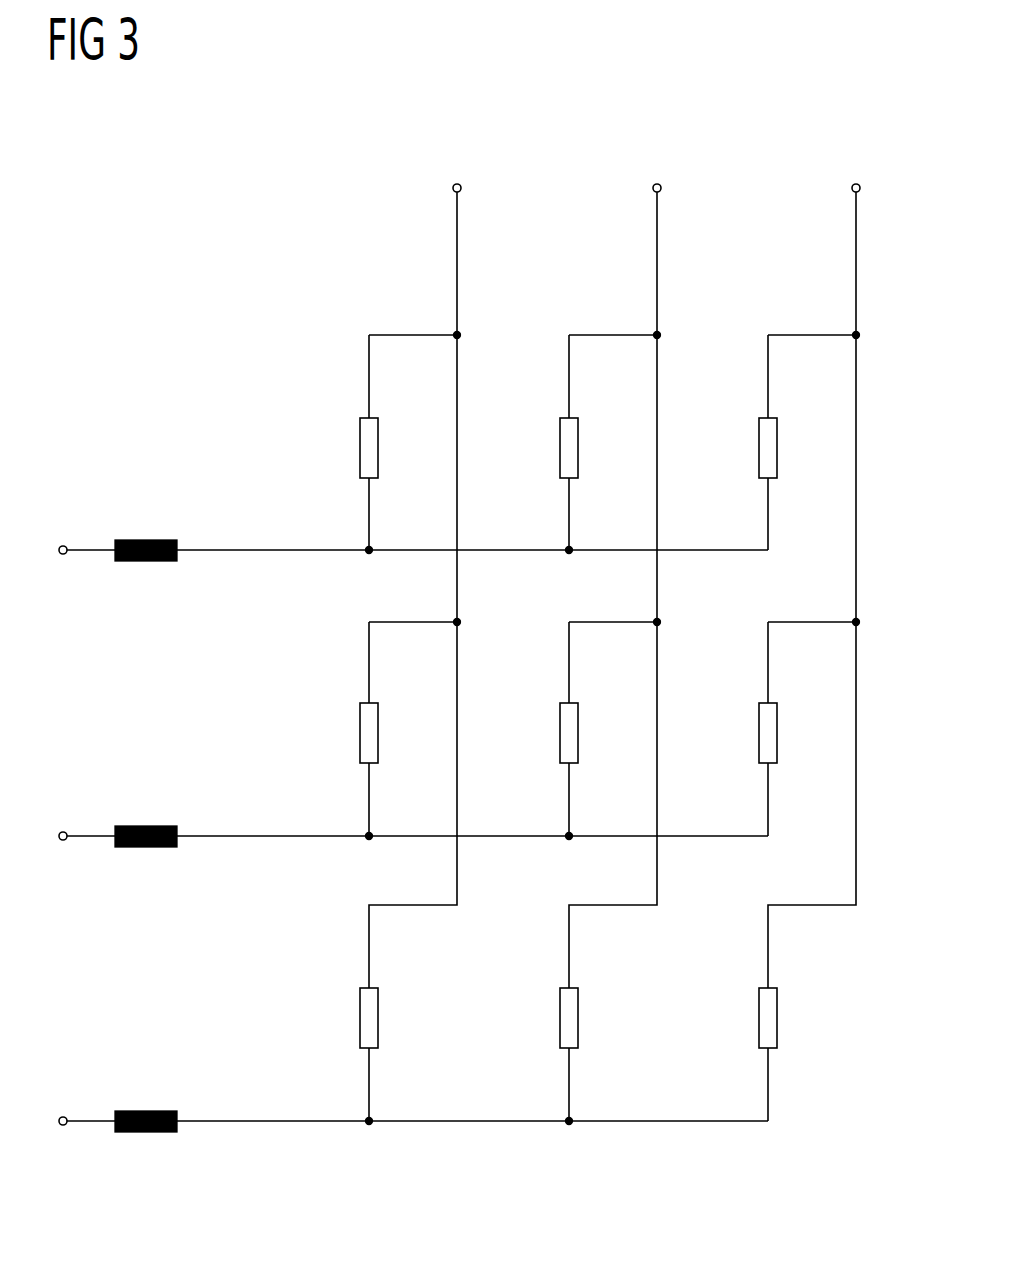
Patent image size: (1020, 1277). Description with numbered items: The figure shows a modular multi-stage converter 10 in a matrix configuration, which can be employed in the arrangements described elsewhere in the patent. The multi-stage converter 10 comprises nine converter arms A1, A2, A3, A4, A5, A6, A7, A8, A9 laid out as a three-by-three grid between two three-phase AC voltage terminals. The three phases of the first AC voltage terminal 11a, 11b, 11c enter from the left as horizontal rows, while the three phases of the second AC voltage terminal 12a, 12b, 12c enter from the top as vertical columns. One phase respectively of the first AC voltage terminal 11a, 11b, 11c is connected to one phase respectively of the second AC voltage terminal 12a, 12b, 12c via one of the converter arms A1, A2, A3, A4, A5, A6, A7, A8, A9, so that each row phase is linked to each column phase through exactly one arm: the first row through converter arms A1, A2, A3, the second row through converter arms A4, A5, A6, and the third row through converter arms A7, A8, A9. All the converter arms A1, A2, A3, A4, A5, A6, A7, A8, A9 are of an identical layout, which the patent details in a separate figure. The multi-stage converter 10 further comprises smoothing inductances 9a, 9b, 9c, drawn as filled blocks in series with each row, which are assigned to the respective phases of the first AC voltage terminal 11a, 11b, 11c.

The modular multi-stage converter 10 is at (196, 178).
The second AC voltage terminal phase 12a is at (457, 183).
The second AC voltage terminal phase 12b is at (657, 183).
The second AC voltage terminal phase 12c is at (856, 183).
The first AC voltage terminal phase 11a is at (64, 545).
The first AC voltage terminal phase 11b is at (64, 831).
The first AC voltage terminal phase 11c is at (64, 1116).
The smoothing inductance 9a is at (147, 540).
The smoothing inductance 9b is at (147, 826).
The smoothing inductance 9c is at (147, 1111).
The converter arm A1 is at (360, 448).
The converter arm A2 is at (560, 448).
The converter arm A3 is at (759, 448).
The converter arm A4 is at (360, 733).
The converter arm A5 is at (560, 733).
The converter arm A6 is at (759, 733).
The converter arm A7 is at (360, 1018).
The converter arm A8 is at (560, 1018).
The converter arm A9 is at (759, 1018).